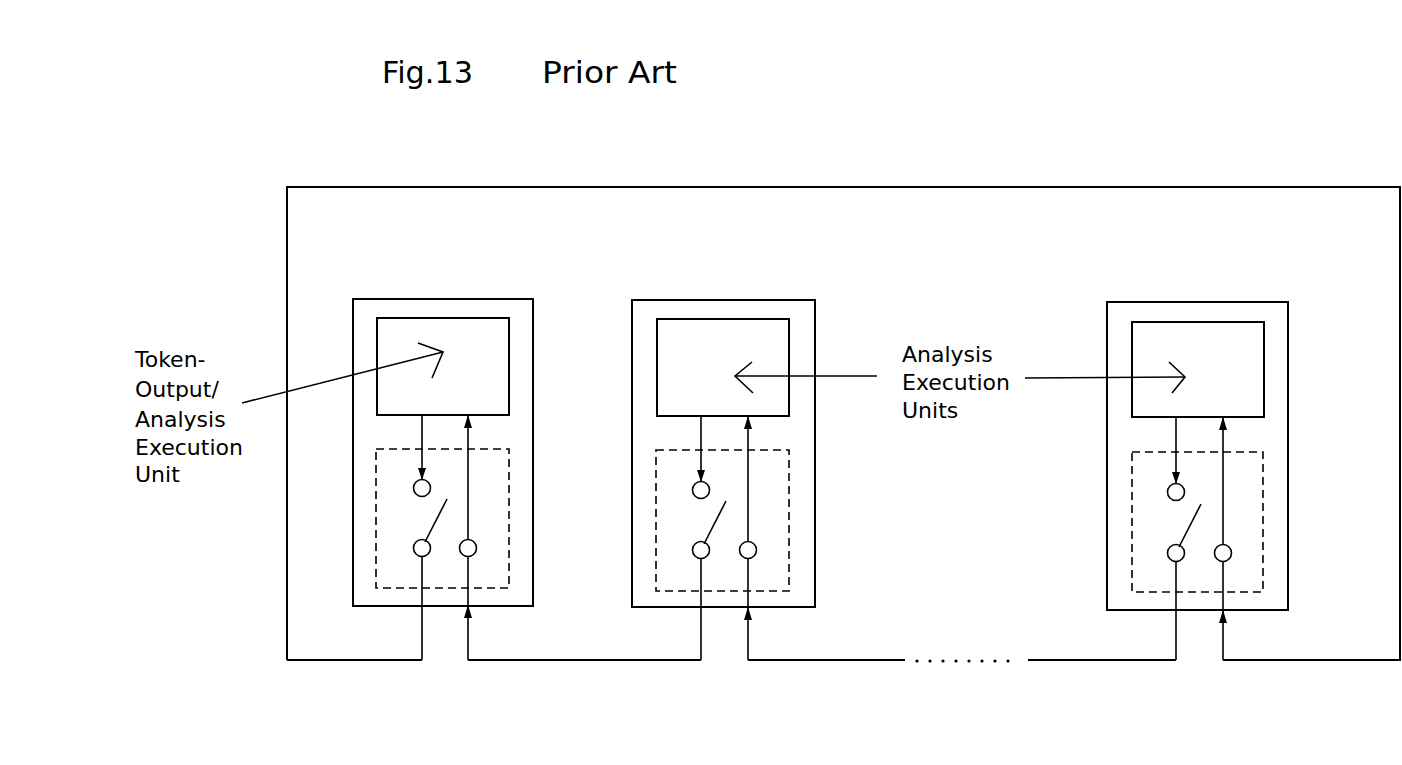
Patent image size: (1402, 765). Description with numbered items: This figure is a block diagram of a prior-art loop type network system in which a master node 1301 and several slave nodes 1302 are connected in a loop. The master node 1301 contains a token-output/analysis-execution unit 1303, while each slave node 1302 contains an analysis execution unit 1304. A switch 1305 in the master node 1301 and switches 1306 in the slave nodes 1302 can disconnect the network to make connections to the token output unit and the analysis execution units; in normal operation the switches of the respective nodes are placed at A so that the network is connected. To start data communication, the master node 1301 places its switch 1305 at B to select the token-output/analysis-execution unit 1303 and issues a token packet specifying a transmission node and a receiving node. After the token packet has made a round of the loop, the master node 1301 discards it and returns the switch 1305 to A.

The master node 1301 is at (392, 299).
The slave nodes 1302 is at (672, 300).
The token-output/analysis-execution unit 1303 is at (474, 318).
The analysis execution units 1304 is at (755, 319).
The switch 1305 is at (509, 513).
The switches 1306 is at (789, 513).